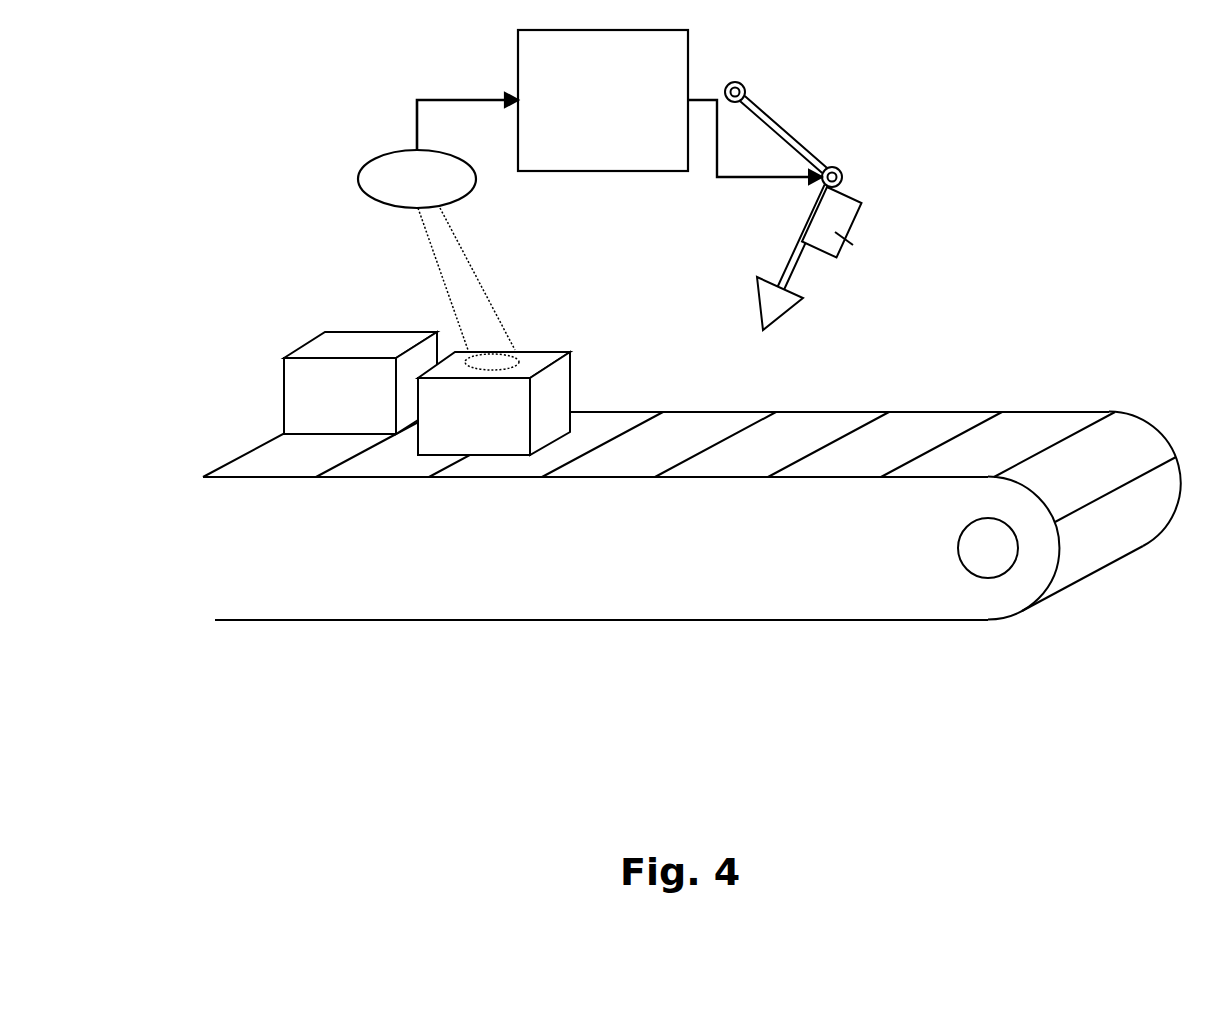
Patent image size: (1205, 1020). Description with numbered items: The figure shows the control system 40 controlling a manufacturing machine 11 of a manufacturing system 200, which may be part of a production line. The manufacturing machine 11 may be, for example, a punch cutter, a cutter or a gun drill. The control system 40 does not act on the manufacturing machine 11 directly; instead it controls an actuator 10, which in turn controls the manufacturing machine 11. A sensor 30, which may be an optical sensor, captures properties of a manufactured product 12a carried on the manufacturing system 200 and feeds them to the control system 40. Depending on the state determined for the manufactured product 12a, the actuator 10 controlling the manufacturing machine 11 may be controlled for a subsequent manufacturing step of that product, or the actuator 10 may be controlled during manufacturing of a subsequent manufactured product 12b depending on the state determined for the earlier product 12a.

The actuator 10 is at (858, 220).
The manufacturing machine 11 is at (800, 143).
The manufactured product 12a is at (577, 383).
The manufactured product 12b is at (302, 346).
The sensor 30 is at (358, 183).
The control system 40 is at (503, 37).
The manufacturing system 200 is at (590, 622).